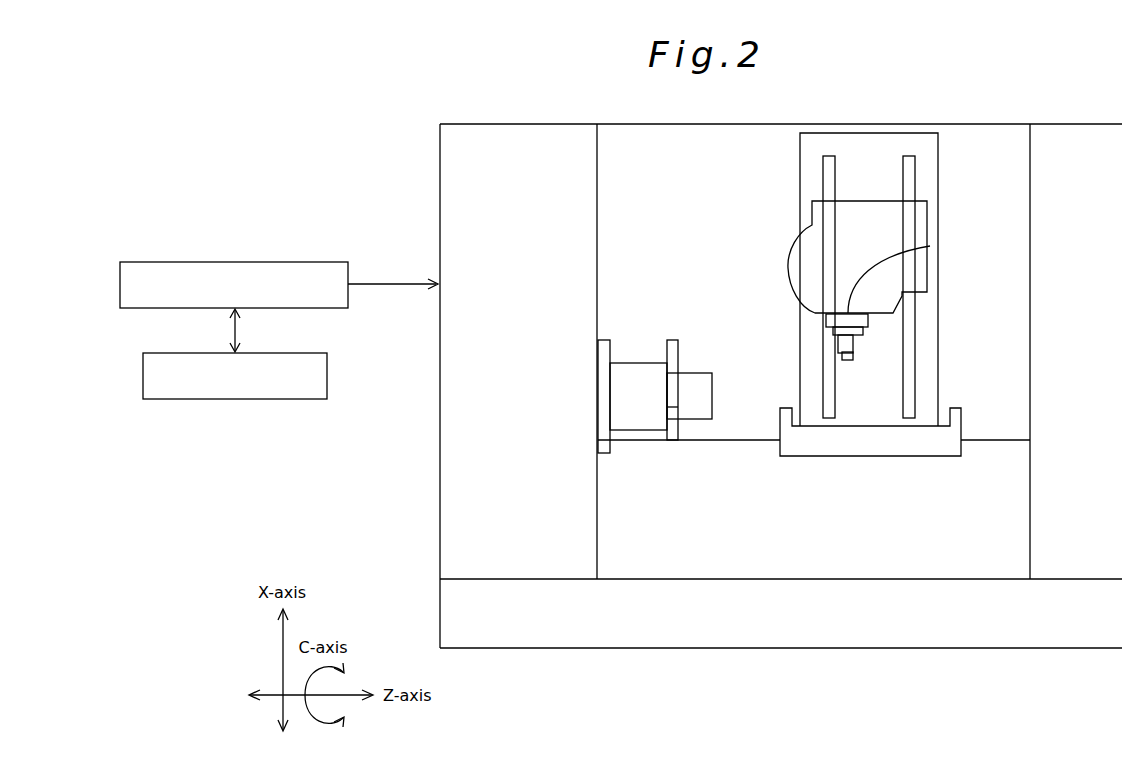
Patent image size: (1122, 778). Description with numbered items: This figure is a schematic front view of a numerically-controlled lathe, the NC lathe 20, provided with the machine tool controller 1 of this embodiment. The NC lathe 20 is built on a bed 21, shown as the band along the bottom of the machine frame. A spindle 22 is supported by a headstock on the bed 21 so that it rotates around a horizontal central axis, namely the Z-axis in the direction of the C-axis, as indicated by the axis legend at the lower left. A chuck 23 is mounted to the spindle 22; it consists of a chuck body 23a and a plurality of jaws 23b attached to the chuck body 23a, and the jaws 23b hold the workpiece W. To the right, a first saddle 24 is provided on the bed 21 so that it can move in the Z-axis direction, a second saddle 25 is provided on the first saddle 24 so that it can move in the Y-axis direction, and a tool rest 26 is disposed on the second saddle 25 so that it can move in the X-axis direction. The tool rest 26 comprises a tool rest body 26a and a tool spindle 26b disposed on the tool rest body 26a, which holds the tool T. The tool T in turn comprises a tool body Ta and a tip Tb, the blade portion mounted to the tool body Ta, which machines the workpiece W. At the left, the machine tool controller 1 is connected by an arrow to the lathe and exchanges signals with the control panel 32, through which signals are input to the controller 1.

The machine tool controller 1 is at (233, 262).
The NC lathe 20 is at (375, 108).
The bed 21 is at (678, 640).
The spindle 22 is at (603, 452).
The chuck 23 is at (656, 336).
The chuck body 23a is at (645, 363).
The jaws 23b is at (683, 357).
The first saddle 24 is at (855, 447).
The second saddle 25 is at (890, 425).
The tool rest 26 is at (841, 240).
The tool rest body 26a is at (800, 263).
The tool spindle 26b is at (930, 246).
The control panel 32 is at (235, 399).
The workpiece W is at (693, 415).
The tool T is at (861, 355).
The tool body Ta is at (850, 345).
The tip Tb is at (842, 355).